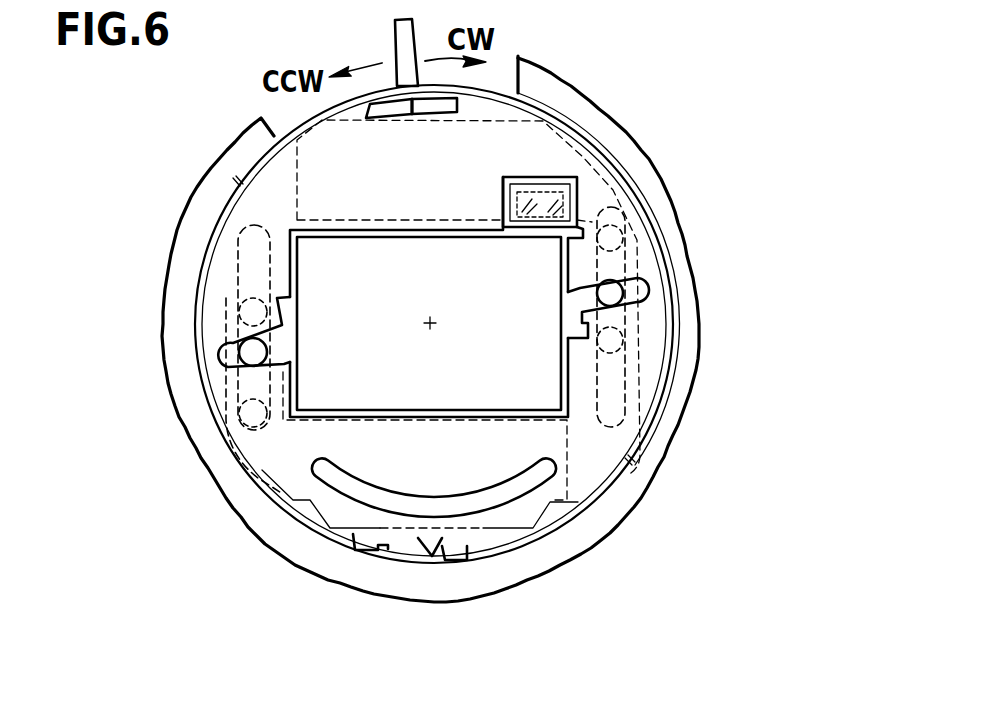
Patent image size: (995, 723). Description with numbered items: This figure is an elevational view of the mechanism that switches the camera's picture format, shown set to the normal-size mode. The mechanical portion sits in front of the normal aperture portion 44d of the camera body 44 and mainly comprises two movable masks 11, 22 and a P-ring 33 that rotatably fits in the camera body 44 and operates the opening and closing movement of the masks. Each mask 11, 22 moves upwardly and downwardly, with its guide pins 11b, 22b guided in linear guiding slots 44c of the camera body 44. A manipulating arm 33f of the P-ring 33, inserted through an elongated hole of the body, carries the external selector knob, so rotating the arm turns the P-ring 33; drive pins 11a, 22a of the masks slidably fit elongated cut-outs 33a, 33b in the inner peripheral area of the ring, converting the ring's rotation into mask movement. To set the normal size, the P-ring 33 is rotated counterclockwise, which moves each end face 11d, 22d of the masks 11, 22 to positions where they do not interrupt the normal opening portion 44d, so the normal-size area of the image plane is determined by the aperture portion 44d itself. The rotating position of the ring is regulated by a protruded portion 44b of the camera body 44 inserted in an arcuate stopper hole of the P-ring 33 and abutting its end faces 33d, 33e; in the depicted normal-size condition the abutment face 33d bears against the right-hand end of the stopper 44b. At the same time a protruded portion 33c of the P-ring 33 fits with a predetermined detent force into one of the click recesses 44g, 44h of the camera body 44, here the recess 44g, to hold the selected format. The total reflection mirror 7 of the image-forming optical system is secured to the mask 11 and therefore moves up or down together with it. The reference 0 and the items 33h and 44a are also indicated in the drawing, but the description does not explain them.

The camera body 44 is at (262, 121).
The P-ring 33 is at (625, 385).
The movable mask 11 is at (545, 145).
The manipulating arm 33f is at (400, 42).
The end face of arcuate stopper hole 33e is at (372, 118).
The end face of arcuate stopper hole 33d is at (465, 106).
The protruded portion 44b is at (440, 112).
The total reflection mirror 7 is at (562, 206).
The end face of mask 11d is at (420, 222).
The holes 33h is at (485, 236).
The normal aperture portion 44d is at (473, 410).
The center 0 is at (440, 324).
The end face of mask 22d is at (332, 416).
The drive pin 22a is at (253, 352).
The guide pin 22b is at (253, 312).
The elongated cut-out 33b is at (230, 370).
The drive pin 11a is at (622, 297).
The guide pin 11b is at (617, 242).
The elongated cut-out 33a is at (600, 282).
The linear guiding slots 44c is at (240, 246).
The movable mask 22 is at (310, 530).
The click recess 44h is at (380, 548).
The click recess 44g is at (432, 552).
The protruded portion 33c is at (452, 562).
The end of ring 44a is at (630, 463).